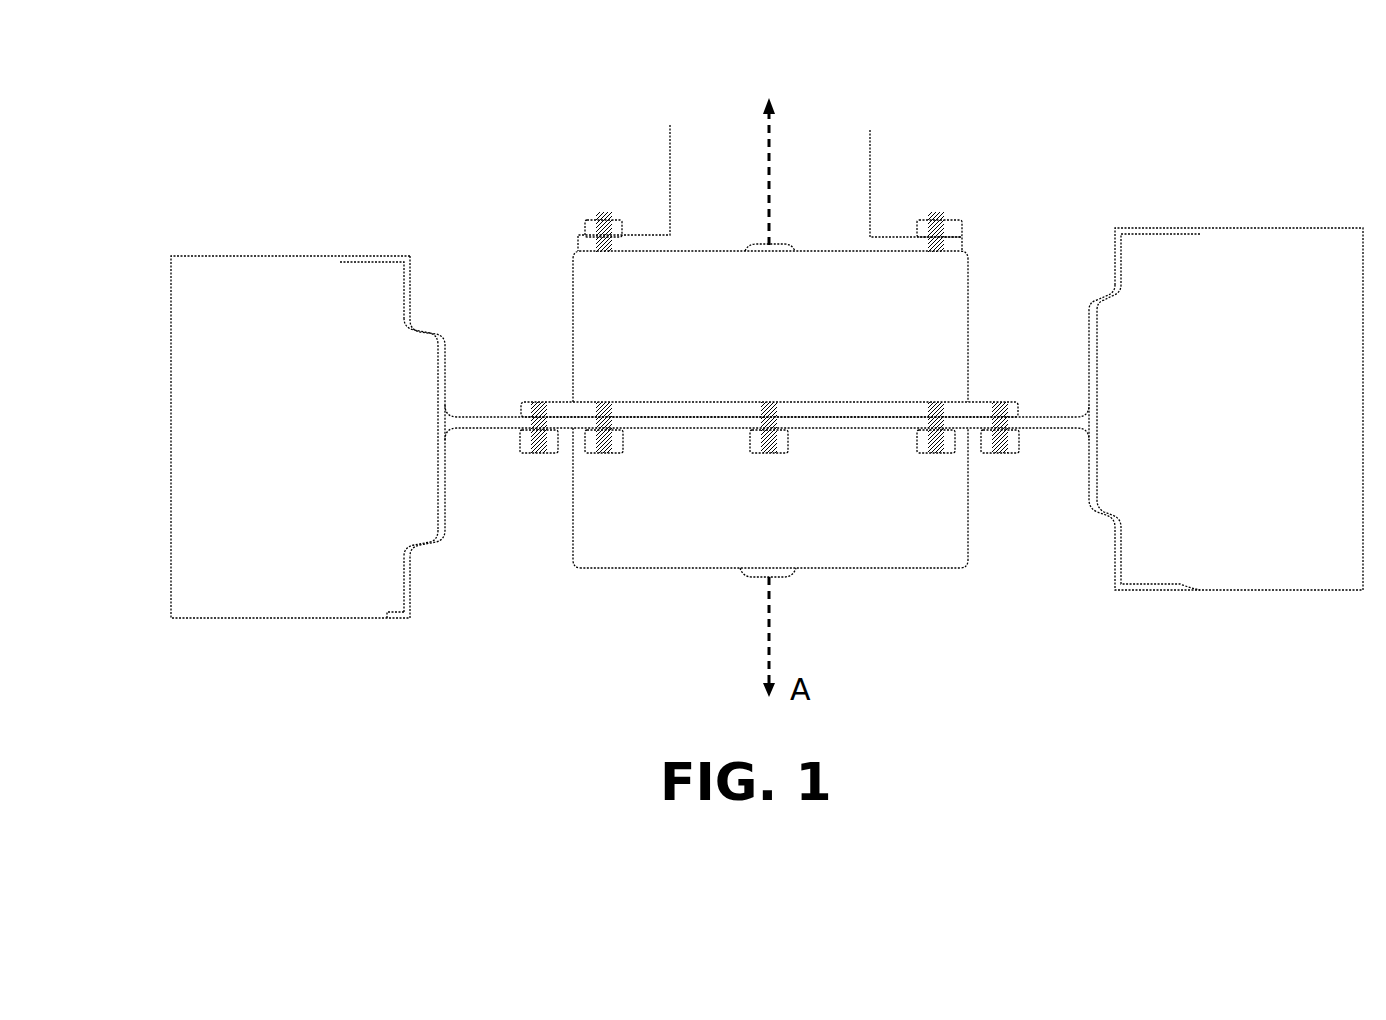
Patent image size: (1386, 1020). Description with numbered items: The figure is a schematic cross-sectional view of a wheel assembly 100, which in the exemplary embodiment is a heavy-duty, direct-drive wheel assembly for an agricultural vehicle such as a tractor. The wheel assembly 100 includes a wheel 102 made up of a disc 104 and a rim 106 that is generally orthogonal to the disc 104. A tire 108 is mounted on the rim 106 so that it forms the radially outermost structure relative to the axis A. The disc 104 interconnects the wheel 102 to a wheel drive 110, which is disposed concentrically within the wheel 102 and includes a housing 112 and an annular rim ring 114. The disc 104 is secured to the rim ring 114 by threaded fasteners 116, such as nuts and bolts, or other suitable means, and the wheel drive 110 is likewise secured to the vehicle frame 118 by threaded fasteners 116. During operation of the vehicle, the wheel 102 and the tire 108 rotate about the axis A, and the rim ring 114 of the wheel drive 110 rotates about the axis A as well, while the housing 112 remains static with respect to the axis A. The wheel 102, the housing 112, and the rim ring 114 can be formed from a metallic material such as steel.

The wheel assembly 100 is at (432, 157).
The wheel 102 is at (438, 566).
The disc 104 is at (485, 430).
The rim 106 is at (440, 542).
The tire 108 is at (326, 447).
The wheel drive 110 is at (796, 364).
The housing 112 is at (910, 555).
The rim ring 114 is at (966, 412).
The threaded fasteners 116 is at (938, 238).
The vehicle frame 118 is at (855, 190).